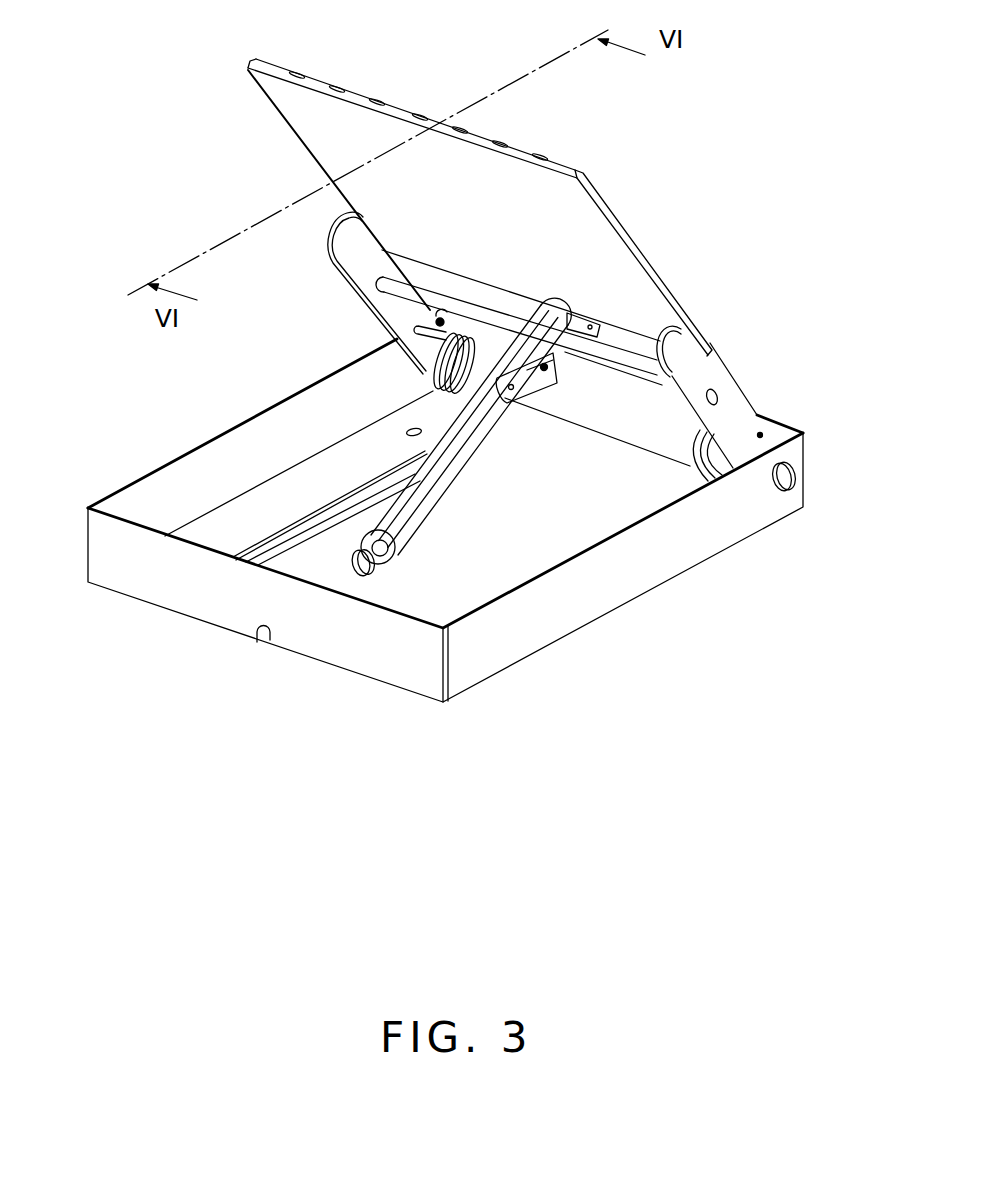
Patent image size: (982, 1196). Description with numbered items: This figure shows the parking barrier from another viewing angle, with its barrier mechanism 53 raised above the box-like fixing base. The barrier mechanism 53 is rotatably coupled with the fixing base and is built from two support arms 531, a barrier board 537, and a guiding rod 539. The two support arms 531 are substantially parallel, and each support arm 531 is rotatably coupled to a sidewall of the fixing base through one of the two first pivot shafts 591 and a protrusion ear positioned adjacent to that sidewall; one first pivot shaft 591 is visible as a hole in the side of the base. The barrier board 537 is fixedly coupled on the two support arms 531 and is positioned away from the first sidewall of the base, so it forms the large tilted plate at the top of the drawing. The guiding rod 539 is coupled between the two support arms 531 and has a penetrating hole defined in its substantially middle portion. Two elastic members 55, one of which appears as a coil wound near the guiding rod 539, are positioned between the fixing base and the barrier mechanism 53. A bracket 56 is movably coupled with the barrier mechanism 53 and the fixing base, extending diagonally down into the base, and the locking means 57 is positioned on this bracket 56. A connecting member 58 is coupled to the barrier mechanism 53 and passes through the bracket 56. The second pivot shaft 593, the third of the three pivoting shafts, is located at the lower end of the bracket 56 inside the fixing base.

The barrier mechanism 53 is at (543, 263).
The support arm 531 is at (730, 380).
The barrier board 537 is at (585, 250).
The guiding rod 539 is at (607, 360).
The elastic member 55 is at (447, 370).
The bracket 56 is at (367, 507).
The locking means 57 is at (553, 377).
The connecting member 58 is at (270, 637).
The first pivot shaft 591 is at (786, 483).
The second pivot shaft 593 is at (365, 575).